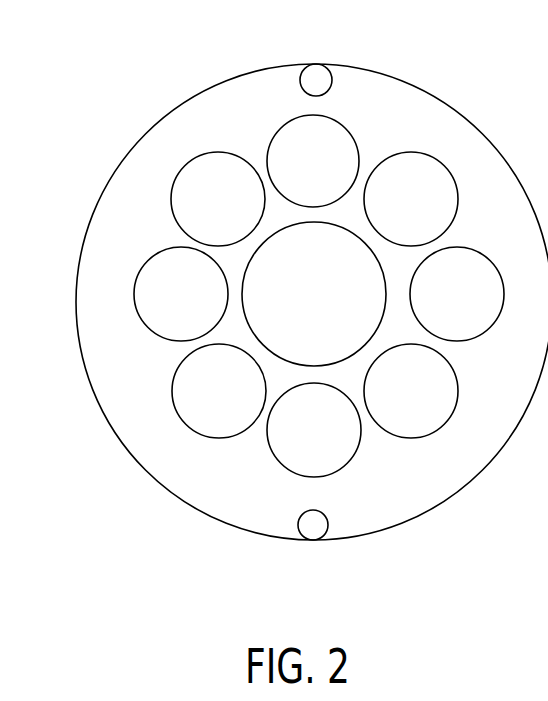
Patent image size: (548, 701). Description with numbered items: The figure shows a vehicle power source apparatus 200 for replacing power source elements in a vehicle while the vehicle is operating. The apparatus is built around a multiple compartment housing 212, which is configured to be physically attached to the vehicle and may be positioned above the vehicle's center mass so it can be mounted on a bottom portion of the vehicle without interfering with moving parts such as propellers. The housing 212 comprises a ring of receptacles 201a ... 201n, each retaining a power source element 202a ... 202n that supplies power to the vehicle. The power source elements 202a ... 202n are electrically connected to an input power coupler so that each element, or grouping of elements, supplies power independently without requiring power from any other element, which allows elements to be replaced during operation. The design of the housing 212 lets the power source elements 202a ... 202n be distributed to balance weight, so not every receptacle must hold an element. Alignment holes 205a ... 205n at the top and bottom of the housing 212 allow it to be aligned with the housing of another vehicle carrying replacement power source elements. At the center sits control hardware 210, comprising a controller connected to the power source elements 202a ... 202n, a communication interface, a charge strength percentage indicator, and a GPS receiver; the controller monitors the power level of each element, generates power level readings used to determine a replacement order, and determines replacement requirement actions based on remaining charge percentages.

The vehicle power source apparatus 200 is at (90, 113).
The multiple compartment housing 212 is at (110, 180).
The control hardware 210 is at (355, 279).
The receptacle 201a is at (350, 130).
The power source element 202a is at (293, 145).
The receptacle 201n is at (355, 451).
The power source element 202n is at (293, 453).
The alignment hole 205a is at (317, 69).
The alignment hole 205n is at (314, 538).